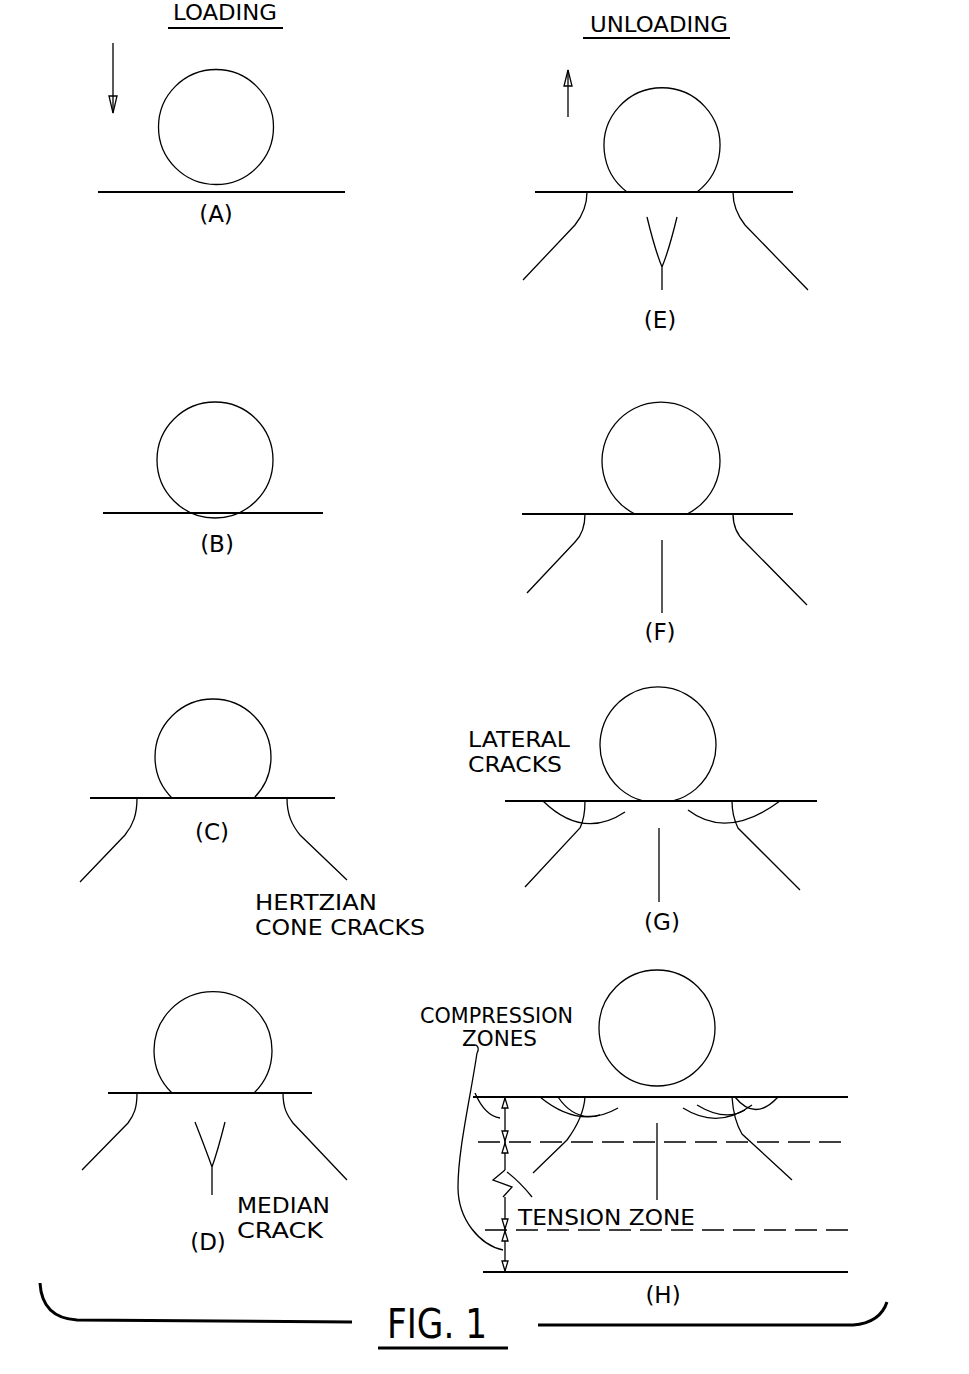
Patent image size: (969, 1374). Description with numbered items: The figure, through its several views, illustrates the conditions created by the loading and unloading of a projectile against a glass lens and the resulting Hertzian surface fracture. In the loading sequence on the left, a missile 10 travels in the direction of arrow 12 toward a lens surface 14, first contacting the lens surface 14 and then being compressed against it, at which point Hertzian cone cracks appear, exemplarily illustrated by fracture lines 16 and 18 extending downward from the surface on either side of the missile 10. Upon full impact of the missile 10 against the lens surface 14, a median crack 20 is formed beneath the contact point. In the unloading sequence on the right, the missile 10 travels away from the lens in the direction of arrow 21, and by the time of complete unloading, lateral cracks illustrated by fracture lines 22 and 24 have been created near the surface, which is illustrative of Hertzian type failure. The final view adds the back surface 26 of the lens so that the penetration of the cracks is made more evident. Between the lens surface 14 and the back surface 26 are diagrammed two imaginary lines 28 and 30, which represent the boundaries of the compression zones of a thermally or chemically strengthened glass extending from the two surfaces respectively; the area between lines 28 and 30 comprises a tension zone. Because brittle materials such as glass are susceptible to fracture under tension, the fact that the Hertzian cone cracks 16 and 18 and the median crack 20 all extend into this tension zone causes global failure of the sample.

The missile 10 is at (272, 115).
The arrow 12 is at (96, 78).
The lens surface 14 is at (288, 192).
The fracture line 16 is at (563, 238).
The fracture line 18 is at (767, 245).
The median crack 20 is at (653, 240).
The arrow 21 is at (548, 93).
The fracture line 22 is at (562, 818).
The fracture line 24 is at (763, 817).
The back surface 26 is at (753, 1272).
The imaginary line 28 is at (797, 1142).
The imaginary line 30 is at (743, 1230).